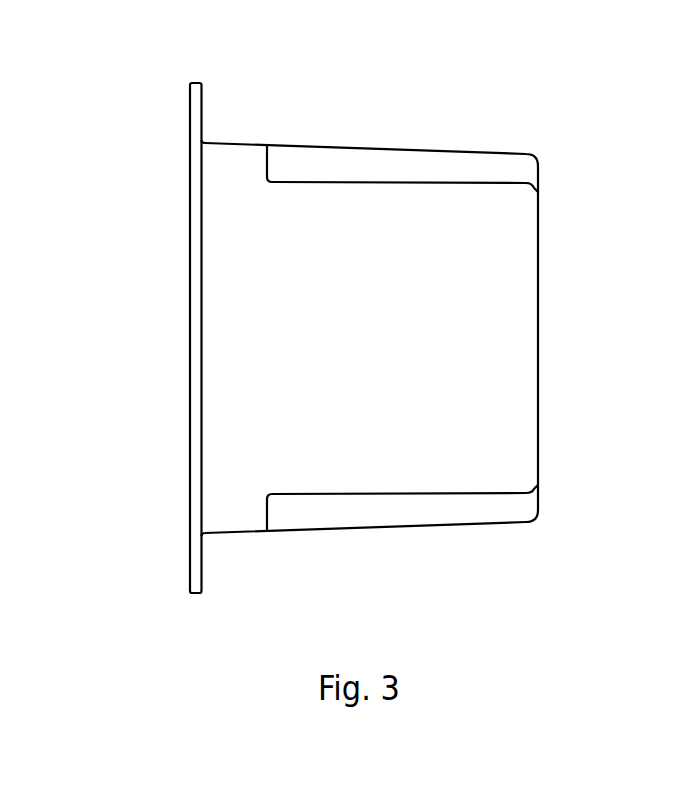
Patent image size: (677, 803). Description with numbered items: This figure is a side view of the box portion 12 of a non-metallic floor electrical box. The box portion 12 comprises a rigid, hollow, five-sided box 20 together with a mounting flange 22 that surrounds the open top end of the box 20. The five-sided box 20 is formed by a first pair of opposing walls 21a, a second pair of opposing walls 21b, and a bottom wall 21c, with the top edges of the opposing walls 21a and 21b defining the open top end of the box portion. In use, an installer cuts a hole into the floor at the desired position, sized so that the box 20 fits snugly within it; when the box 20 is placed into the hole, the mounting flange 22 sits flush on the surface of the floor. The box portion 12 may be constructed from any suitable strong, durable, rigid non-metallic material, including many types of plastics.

The box portion 12 is at (160, 150).
The mounting flange 22 is at (202, 97).
The five-sided box 20 is at (525, 213).
The first pair of opposing walls 21a is at (402, 338).
The second pair of opposing walls 21b is at (403, 528).
The bottom wall 21c is at (538, 333).